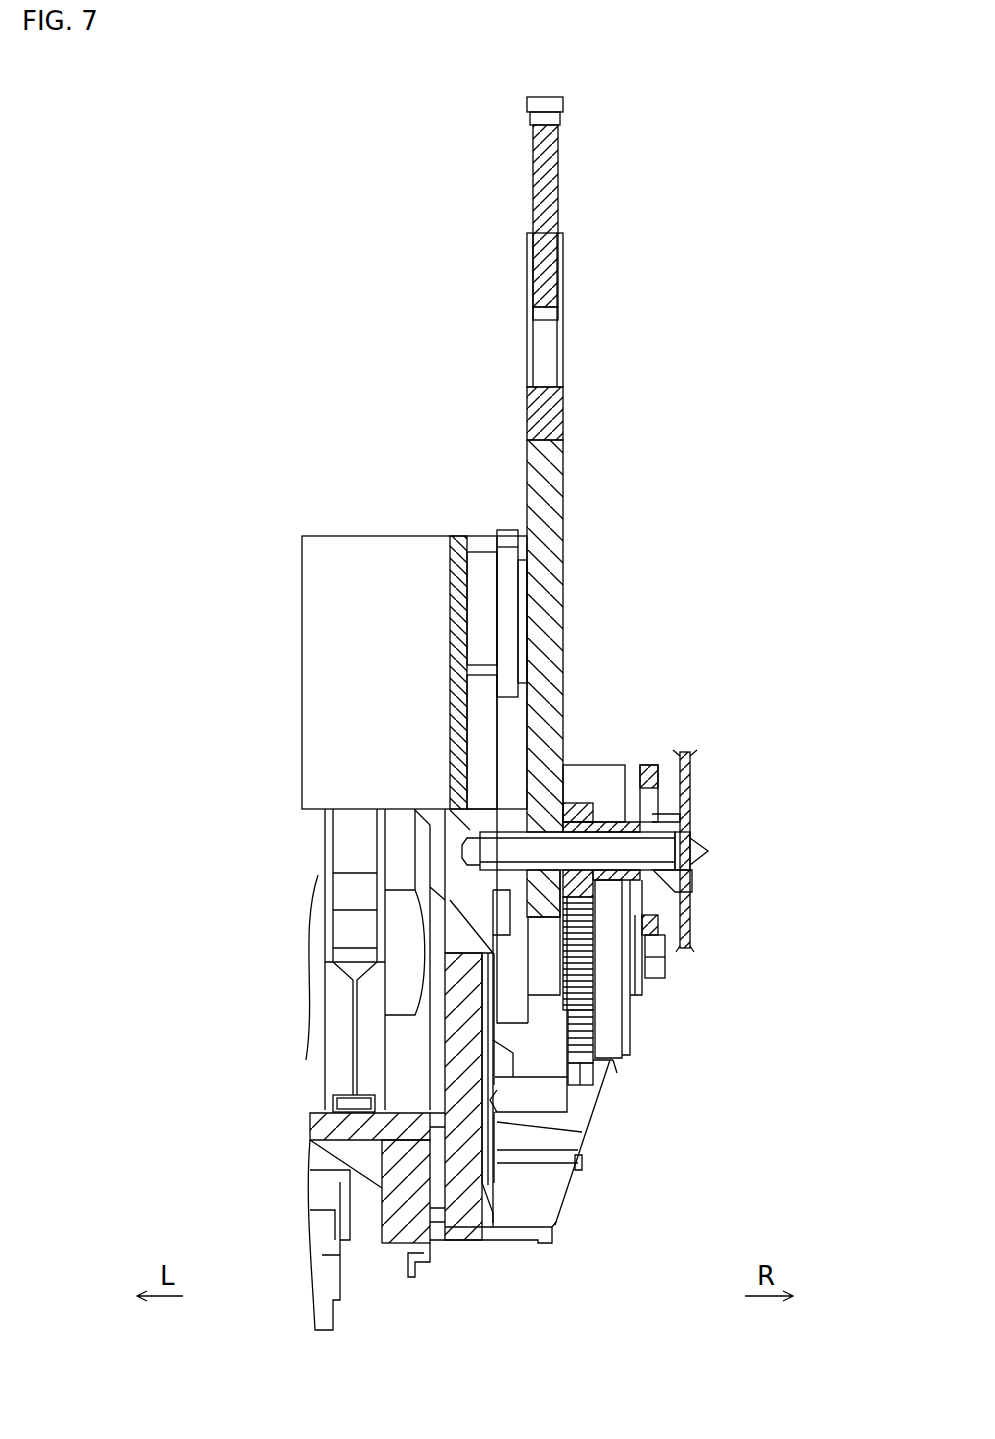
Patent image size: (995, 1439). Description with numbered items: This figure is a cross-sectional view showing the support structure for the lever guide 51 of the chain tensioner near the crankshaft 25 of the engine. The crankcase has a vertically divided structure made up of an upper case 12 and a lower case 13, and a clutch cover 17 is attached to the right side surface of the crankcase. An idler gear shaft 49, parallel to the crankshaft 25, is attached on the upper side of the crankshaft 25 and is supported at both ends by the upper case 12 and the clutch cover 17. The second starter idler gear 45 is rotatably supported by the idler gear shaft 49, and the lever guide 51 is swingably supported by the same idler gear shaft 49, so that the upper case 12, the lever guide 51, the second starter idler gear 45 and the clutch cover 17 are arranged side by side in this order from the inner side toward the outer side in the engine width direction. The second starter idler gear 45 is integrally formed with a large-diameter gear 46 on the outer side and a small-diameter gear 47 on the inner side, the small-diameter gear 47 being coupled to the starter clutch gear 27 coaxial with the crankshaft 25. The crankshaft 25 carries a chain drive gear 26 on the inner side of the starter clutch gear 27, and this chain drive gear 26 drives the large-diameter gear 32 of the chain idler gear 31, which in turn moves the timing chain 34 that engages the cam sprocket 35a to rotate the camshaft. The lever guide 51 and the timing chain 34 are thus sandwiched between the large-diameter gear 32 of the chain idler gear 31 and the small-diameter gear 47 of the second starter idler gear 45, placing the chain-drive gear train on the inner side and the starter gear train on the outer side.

The cam sprocket 35a is at (556, 207).
The timing chain 34 is at (553, 410).
The lever guide 51 is at (553, 521).
The upper case 12 is at (460, 546).
The large-diameter gear 32 is at (513, 751).
The chain idler gear 31 is at (485, 784).
The small-diameter gear 47 is at (581, 803).
The large-diameter gear 46 is at (686, 763).
The second starter idler gear 45 is at (680, 770).
The clutch cover 17 is at (690, 775).
The idler gear shaft 49 is at (655, 850).
The crankshaft 25 is at (560, 985).
The starter clutch gear 27 is at (583, 1085).
The chain drive gear 26 is at (518, 1012).
The lower case 13 is at (401, 1240).